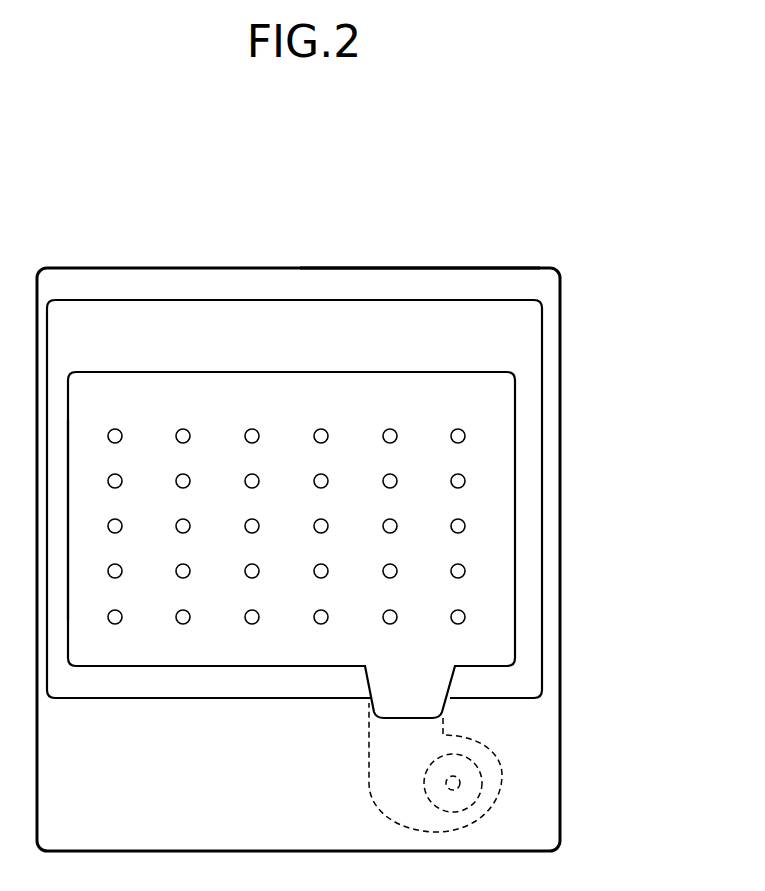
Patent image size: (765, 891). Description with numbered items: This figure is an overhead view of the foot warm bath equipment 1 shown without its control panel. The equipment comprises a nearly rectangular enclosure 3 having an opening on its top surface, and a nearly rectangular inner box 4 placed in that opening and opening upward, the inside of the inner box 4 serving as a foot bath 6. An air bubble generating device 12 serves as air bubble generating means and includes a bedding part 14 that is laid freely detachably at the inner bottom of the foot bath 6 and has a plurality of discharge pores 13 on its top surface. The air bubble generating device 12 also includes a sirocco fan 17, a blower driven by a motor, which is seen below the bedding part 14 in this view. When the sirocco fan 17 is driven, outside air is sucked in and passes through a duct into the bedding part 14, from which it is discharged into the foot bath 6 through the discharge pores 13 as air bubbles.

The foot warm bath equipment 1 is at (500, 262).
The enclosure 3 is at (374, 268).
The inner box 4 is at (530, 328).
The foot bath 6 is at (266, 348).
The air bubble generating device 12 is at (489, 438).
The discharge pores 13 is at (396, 432).
The bedding part 14 is at (502, 493).
The sirocco fan 17 is at (501, 770).